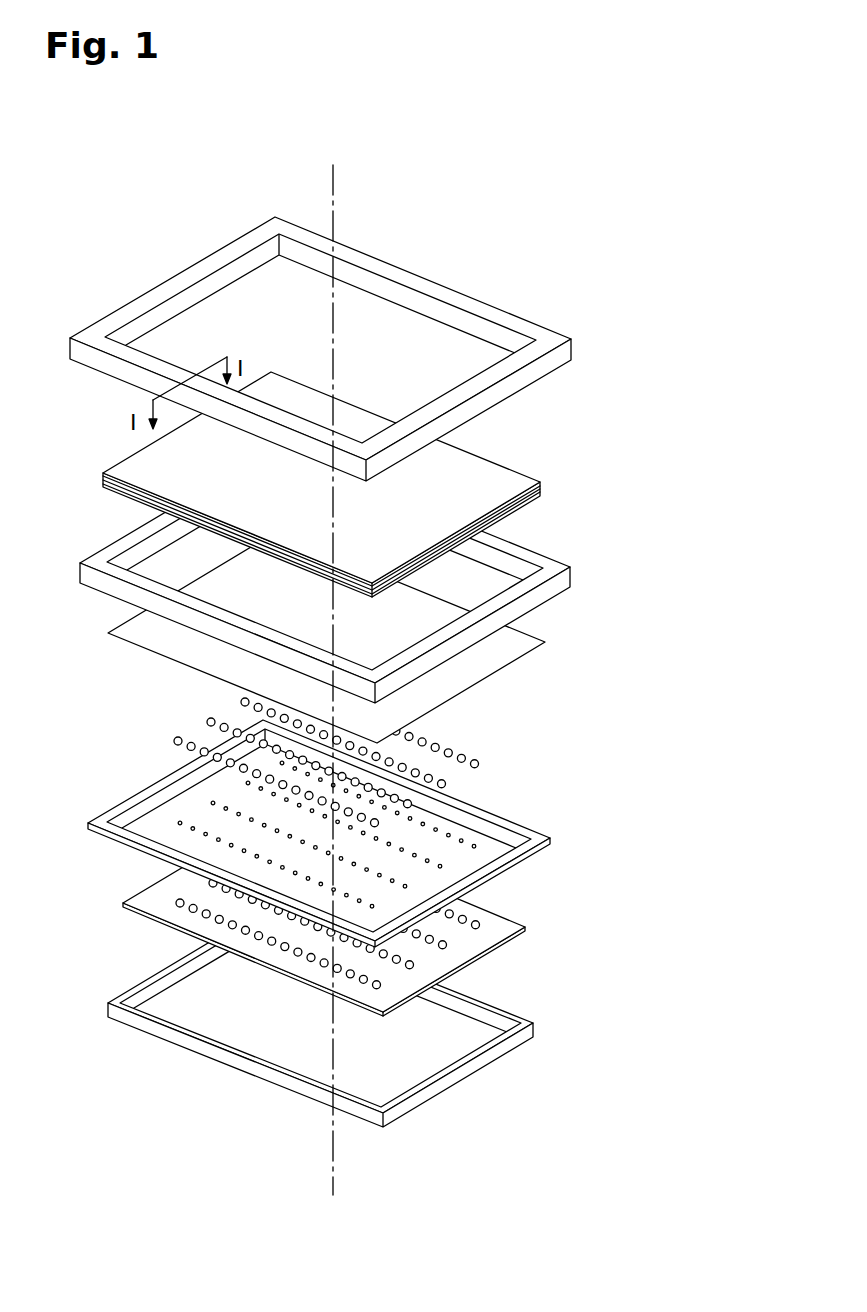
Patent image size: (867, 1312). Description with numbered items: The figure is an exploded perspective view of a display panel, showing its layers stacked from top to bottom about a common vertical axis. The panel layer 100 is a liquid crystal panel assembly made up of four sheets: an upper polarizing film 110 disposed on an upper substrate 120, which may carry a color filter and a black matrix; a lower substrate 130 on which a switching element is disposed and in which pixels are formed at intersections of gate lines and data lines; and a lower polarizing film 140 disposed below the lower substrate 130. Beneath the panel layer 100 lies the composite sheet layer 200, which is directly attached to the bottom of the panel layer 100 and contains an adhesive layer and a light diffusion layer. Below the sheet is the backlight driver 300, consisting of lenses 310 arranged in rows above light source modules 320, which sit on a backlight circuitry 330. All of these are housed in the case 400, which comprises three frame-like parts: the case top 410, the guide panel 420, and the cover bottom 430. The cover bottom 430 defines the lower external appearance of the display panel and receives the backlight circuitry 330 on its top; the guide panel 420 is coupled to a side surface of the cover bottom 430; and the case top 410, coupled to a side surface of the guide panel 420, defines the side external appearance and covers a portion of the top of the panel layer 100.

The panel layer 100 is at (408, 484).
The upper polarizing film 110 is at (527, 478).
The upper substrate 120 is at (535, 485).
The lower substrate 130 is at (541, 491).
The lower polarizing film 140 is at (374, 539).
The composite sheet layer 200 is at (548, 640).
The backlight driver 300 is at (401, 917).
The lenses 310 is at (479, 767).
The light source modules 320 is at (482, 921).
The backlight circuitry 330 is at (487, 945).
The case 400 is at (553, 837).
The case top 410 is at (572, 339).
The guide panel 420 is at (572, 567).
The cover bottom 430 is at (536, 1023).